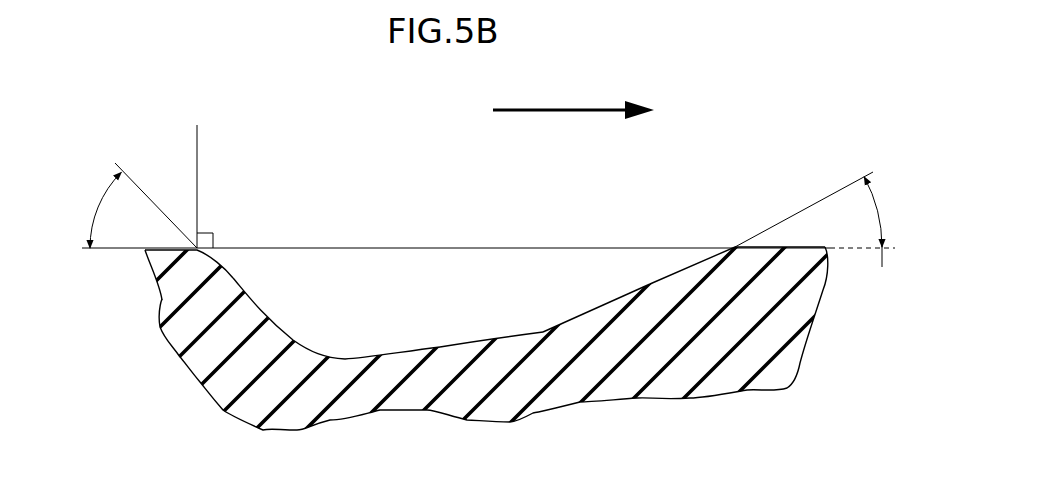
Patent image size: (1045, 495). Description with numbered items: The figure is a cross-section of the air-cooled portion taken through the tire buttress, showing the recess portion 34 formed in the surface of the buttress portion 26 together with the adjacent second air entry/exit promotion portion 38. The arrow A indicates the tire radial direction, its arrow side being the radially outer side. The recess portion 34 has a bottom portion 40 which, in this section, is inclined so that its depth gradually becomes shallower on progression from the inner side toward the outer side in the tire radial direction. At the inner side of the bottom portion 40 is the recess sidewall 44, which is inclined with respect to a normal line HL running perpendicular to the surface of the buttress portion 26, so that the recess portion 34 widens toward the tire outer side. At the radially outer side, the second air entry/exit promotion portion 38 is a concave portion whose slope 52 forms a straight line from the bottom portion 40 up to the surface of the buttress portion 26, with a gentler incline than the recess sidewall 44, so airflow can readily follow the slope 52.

The buttress portion 26 is at (157, 249).
The recess portion 34 is at (397, 346).
The second air entry/exit promotion portion 38 is at (647, 279).
The bottom portion 40 is at (438, 345).
The recess sidewall 44 is at (262, 297).
The slope 52 is at (670, 275).
The normal line HL is at (198, 175).
The arrow A direction A is at (555, 109).